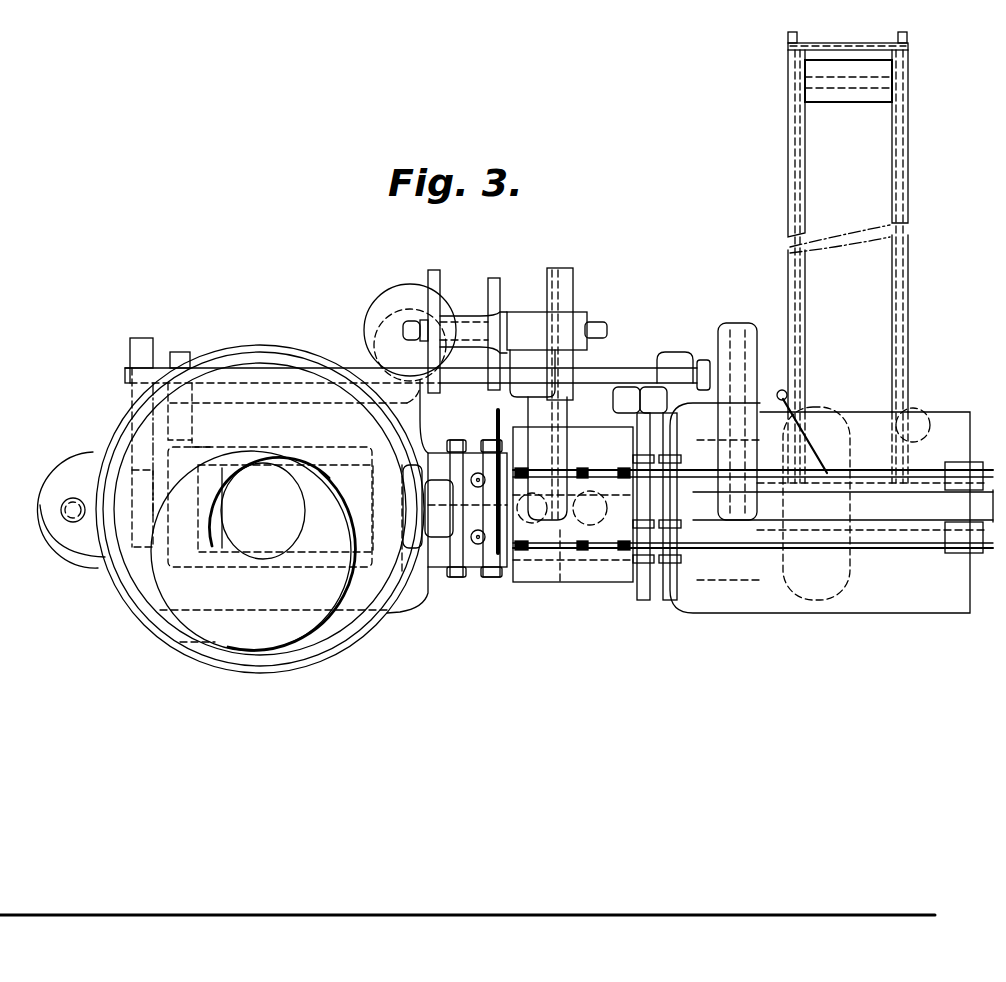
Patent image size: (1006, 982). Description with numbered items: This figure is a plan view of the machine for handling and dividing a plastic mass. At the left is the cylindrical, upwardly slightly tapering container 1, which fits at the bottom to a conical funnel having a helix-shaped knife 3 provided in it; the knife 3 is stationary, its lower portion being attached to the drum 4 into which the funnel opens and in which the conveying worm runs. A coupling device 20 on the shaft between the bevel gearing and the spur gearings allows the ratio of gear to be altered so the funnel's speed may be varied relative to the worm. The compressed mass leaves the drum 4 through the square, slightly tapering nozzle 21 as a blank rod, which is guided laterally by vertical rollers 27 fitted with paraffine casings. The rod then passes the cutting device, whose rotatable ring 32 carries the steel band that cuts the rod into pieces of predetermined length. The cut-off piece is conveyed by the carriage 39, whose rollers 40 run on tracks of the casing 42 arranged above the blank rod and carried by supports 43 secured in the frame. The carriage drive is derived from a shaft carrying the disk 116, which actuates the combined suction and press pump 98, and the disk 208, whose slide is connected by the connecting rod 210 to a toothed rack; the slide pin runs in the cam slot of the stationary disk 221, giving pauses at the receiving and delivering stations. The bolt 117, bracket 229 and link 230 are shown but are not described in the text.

The container 1 is at (260, 494).
The knife 3 is at (276, 549).
The drum 4 is at (407, 510).
The coupling device 20 is at (71, 510).
The nozzle 21 is at (466, 532).
The vertical rollers 27 is at (478, 523).
The ring 32 is at (476, 478).
The carriage 39 is at (632, 507).
The rollers 40 is at (572, 547).
The casing 42 is at (831, 508).
The supports 43 is at (670, 406).
The combined suction and press pump 98 is at (403, 331).
The disk 116 is at (458, 329).
The bolt 117 is at (416, 294).
The disk 208 is at (573, 394).
The connecting rod 210 is at (618, 327).
The stationary disk 221 is at (561, 382).
The bracket 229 is at (692, 347).
The link 230 is at (792, 399).